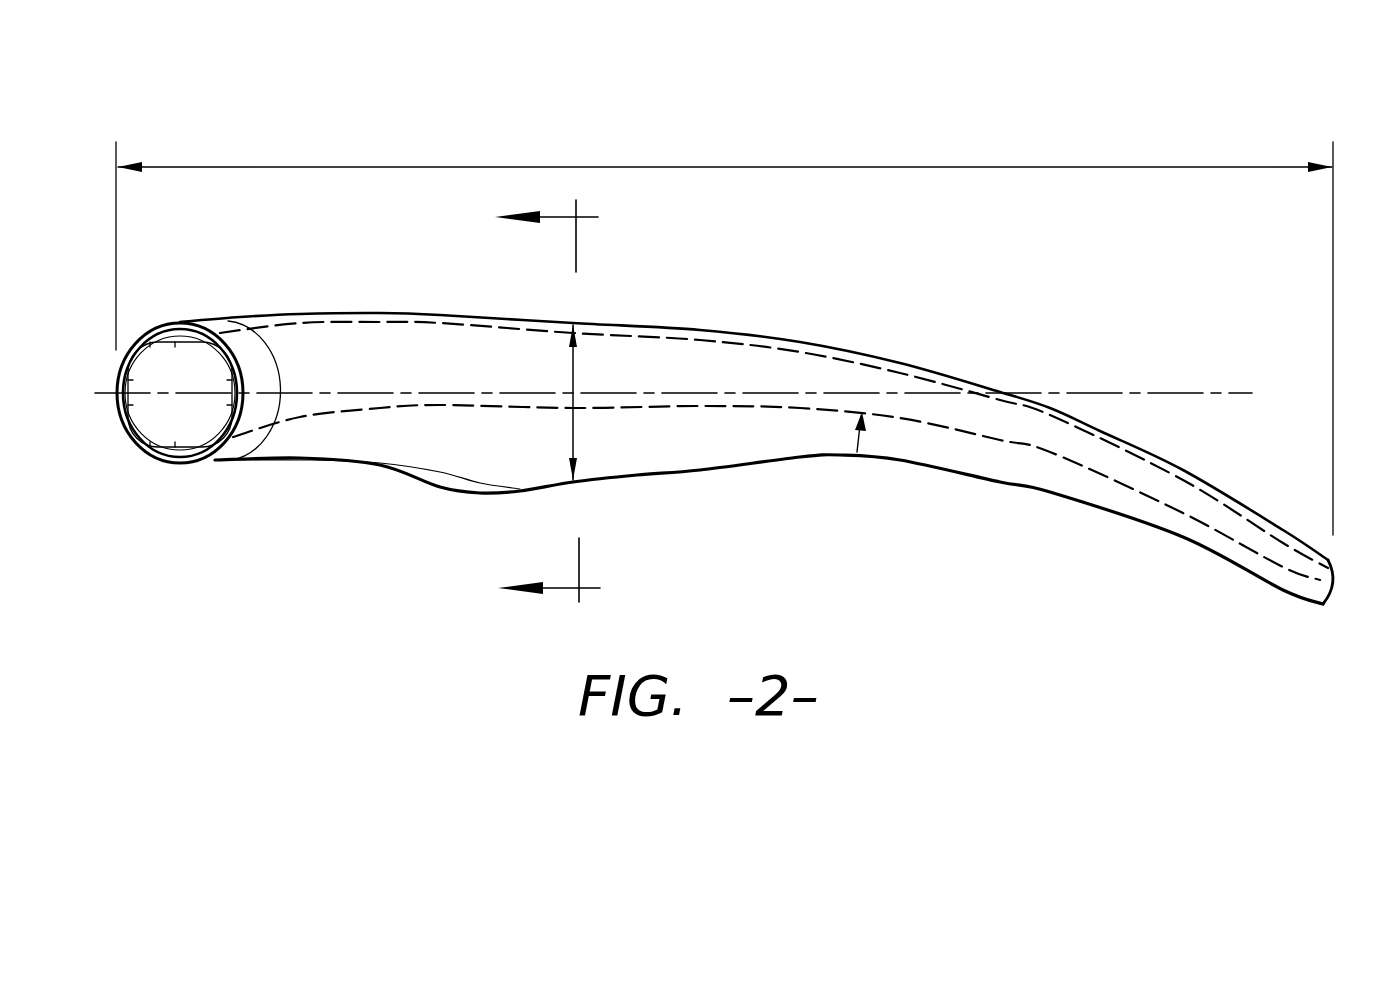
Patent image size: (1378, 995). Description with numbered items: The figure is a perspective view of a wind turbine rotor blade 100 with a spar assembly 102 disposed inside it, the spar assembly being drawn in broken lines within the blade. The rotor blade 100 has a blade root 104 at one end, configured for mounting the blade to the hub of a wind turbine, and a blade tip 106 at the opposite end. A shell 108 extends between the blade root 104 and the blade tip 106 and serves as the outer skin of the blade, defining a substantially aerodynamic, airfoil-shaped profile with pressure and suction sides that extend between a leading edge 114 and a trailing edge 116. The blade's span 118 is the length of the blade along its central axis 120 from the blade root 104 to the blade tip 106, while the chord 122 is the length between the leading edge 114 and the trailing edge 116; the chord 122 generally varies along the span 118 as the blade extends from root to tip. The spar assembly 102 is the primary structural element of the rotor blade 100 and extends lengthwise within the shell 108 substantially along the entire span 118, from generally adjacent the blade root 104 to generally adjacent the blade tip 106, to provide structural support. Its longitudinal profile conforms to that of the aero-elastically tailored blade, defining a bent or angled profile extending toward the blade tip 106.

The rotor blade 100 is at (1142, 121).
The spar assembly 102 is at (857, 452).
The blade root 104 is at (217, 458).
The blade tip 106 is at (1333, 588).
The shell 108 is at (685, 448).
The leading edge 114 is at (642, 300).
The trailing edge 116 is at (523, 490).
The span 118 is at (818, 167).
The central axis 120 is at (1140, 393).
The chord 122 is at (575, 435).